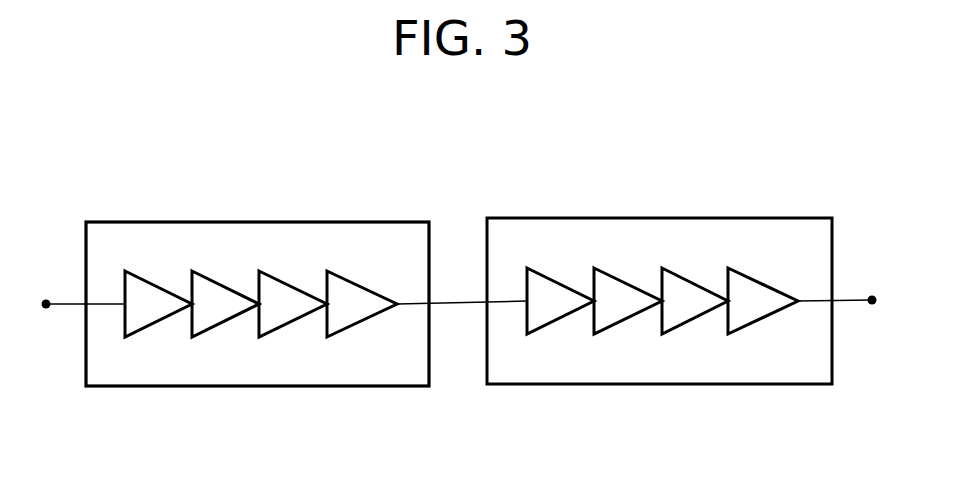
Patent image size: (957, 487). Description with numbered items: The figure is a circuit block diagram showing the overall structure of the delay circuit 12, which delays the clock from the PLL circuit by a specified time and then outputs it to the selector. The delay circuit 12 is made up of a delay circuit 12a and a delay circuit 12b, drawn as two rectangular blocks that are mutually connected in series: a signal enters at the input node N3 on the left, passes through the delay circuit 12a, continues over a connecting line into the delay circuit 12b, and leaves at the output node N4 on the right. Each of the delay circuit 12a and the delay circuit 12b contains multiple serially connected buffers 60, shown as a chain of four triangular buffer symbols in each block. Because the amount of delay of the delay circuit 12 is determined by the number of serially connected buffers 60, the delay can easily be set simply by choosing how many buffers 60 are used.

The delay circuit 12 is at (780, 168).
The delay circuit 12a is at (257, 222).
The delay circuit 12b is at (660, 217).
The buffer 60 is at (153, 323).
The node N3 is at (78, 290).
The node N4 is at (844, 285).